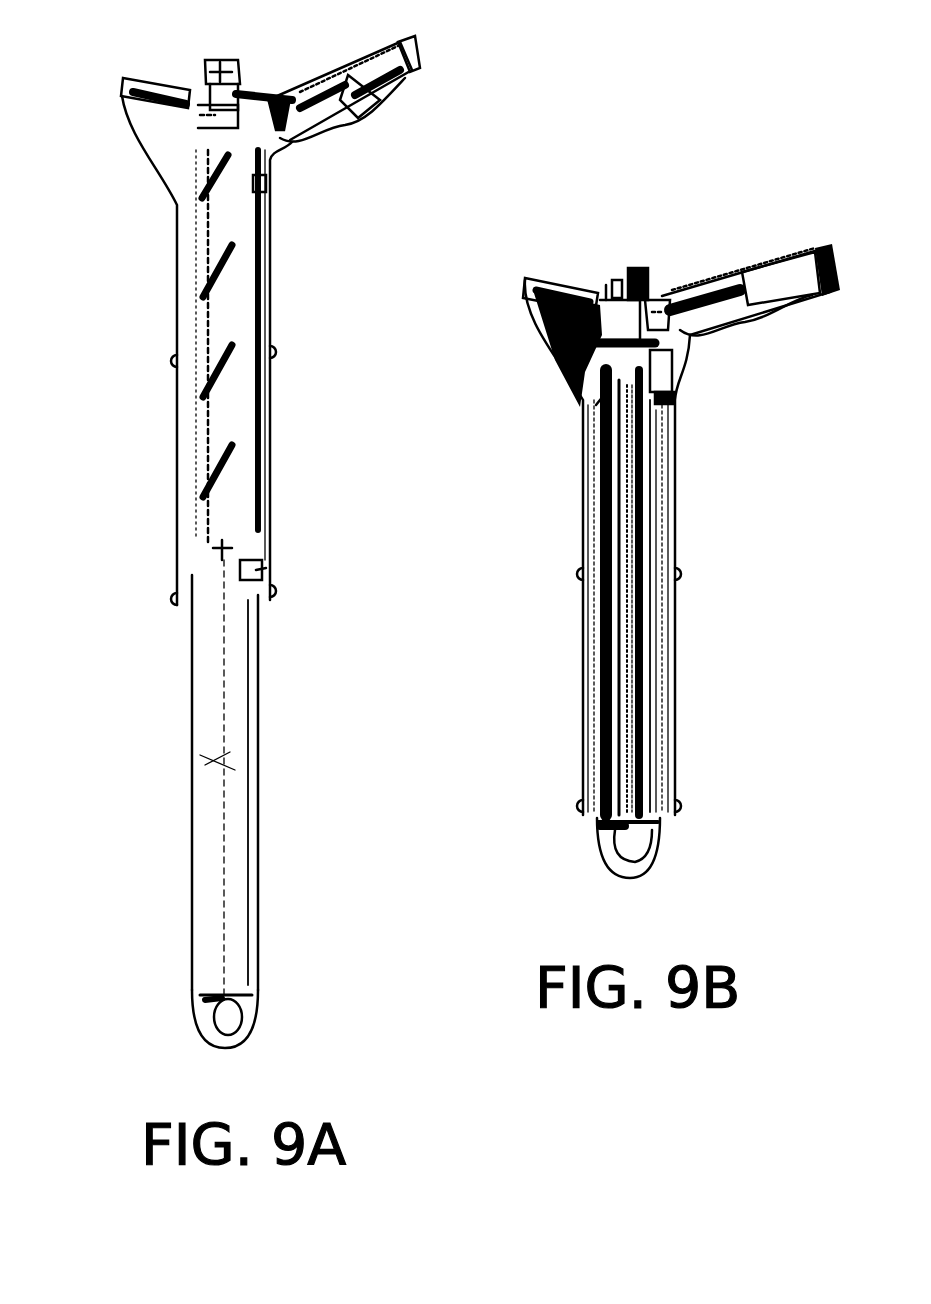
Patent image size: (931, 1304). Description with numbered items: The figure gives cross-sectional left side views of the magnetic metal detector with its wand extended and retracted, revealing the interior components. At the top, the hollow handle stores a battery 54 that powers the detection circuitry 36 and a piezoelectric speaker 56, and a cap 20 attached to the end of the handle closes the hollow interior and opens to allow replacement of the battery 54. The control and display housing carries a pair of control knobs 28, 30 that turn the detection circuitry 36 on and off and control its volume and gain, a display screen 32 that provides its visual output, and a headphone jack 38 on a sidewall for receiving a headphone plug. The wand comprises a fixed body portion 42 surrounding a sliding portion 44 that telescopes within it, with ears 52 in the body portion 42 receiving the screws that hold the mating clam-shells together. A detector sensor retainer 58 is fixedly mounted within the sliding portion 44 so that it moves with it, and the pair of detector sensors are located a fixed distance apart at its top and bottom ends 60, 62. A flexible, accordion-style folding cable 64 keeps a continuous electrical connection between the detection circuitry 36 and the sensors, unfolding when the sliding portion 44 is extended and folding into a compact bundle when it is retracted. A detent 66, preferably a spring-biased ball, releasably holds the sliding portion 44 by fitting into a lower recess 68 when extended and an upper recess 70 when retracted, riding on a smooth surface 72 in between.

In FIG. 9A, the cap 20 is at (412, 68).
In FIG. 9B, the control knob 28 is at (610, 283).
In FIG. 9B, the control knob 30 is at (652, 285).
In FIG. 9A, the display screen 32 is at (160, 78).
In FIG. 9B, the display screen 32 is at (558, 278).
In FIG. 9A, the detection circuitry 36 is at (210, 110).
In FIG. 9B, the detection circuitry 36 is at (612, 318).
In FIG. 9A, the headphone jack 38 is at (250, 112).
In FIG. 9B, the headphone jack 38 is at (660, 302).
In FIG. 9A, the fixed body portion 42 is at (178, 445).
In FIG. 9B, the fixed body portion 42 is at (578, 556).
In FIG. 9A, the sliding portion 44 is at (186, 838).
In FIG. 9B, the sliding portion 44 is at (600, 678).
In FIG. 9A, the ears 52 is at (177, 360).
In FIG. 9A, the battery 54 is at (378, 95).
In FIG. 9B, the battery 54 is at (780, 292).
In FIG. 9A, the piezoelectric speaker 56 is at (270, 105).
In FIG. 9A, the detector sensor retainer 58 is at (220, 708).
In FIG. 9B, the detector sensor retainer 58 is at (622, 515).
In FIG. 9A, the top end of sensor retainer 60 is at (218, 550).
In FIG. 9B, the top end of sensor retainer 60 is at (597, 410).
In FIG. 9A, the bottom end of sensor retainer 62 is at (222, 993).
In FIG. 9B, the bottom end of sensor retainer 62 is at (598, 823).
In FIG. 9A, the folding cable 64 is at (218, 265).
In FIG. 9B, the folding cable 64 is at (590, 358).
In FIG. 9A, the detent 66 is at (250, 562).
In FIG. 9B, the detent 66 is at (660, 420).
In FIG. 9A, the lower recess 68 is at (262, 570).
In FIG. 9A, the upper recess 70 is at (262, 183).
In FIG. 9B, the upper recess 70 is at (675, 398).
In FIG. 9A, the smooth surface 72 is at (258, 318).
In FIG. 9B, the smooth surface 72 is at (655, 688).